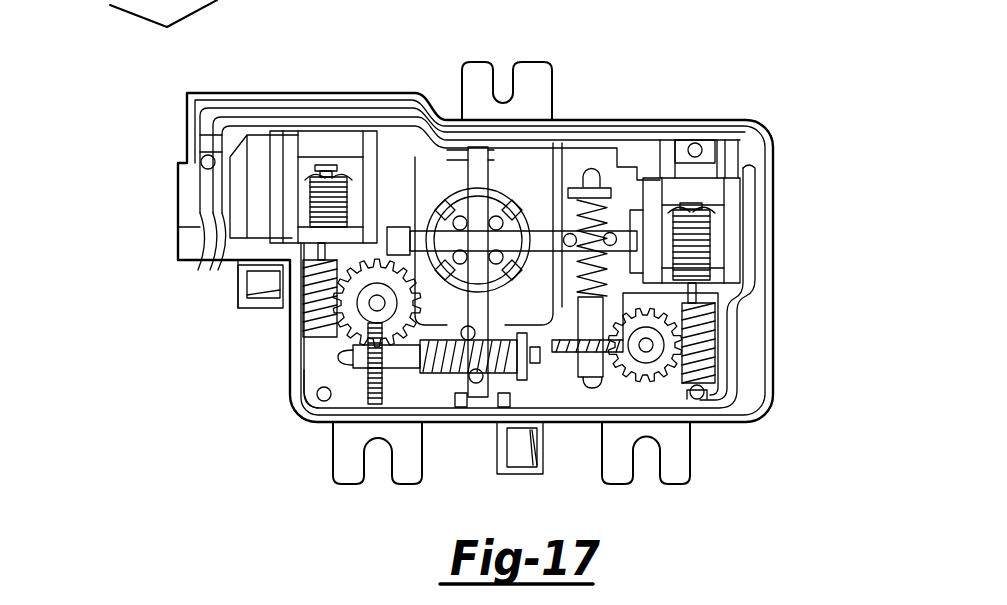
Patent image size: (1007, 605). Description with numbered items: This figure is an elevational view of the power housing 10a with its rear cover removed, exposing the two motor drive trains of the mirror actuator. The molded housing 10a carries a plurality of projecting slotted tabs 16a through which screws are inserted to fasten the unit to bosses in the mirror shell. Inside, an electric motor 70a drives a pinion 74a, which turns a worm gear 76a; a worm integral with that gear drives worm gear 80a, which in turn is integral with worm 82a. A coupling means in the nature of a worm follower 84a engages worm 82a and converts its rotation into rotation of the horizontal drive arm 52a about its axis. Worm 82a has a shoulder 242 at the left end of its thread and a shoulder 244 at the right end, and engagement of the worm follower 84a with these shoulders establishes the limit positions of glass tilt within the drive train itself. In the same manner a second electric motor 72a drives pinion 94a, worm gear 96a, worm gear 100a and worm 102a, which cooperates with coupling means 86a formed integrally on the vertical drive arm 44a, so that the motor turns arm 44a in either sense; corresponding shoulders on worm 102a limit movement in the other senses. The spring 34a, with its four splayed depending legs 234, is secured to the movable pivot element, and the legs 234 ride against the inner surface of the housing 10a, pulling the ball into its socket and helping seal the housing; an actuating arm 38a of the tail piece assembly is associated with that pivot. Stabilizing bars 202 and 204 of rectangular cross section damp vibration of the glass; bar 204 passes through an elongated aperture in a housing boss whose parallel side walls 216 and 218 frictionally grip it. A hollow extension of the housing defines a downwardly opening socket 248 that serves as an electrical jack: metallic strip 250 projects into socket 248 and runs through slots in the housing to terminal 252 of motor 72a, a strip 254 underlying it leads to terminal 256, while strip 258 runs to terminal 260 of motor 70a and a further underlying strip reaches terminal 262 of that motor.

The power housing 10a is at (256, 93).
The projecting slotted tab 16a is at (530, 62).
The spring 34a is at (498, 172).
The actuating arm 38a is at (456, 162).
The vertical drive arm 44a is at (541, 220).
The horizontal drive arm 52a is at (443, 126).
The electric motor 70a is at (340, 135).
The electric motor 72a is at (722, 198).
The pinion 74a is at (307, 307).
The worm gear 76a is at (350, 318).
The worm gear 80a is at (370, 378).
The worm 82a is at (493, 355).
The worm follower 84a is at (456, 377).
The coupling means 86a is at (566, 218).
The pinion 94a is at (708, 358).
The worm gear 96a is at (700, 395).
The worm gear 100a is at (563, 352).
The worm 102a is at (623, 268).
The stabilizing bar 202 is at (255, 282).
The stabilizing bar 204 is at (500, 460).
The side wall 216 is at (503, 476).
The side wall 218 is at (543, 456).
The spring leg 234 is at (446, 201).
The shoulder 242 is at (447, 376).
The shoulder 244 is at (500, 406).
The socket 248 is at (190, 232).
The metallic strip 250 is at (205, 258).
The terminal 252 is at (732, 172).
The metallic strip 254 is at (667, 145).
The terminal 256 is at (688, 156).
The metallic strip 258 is at (223, 258).
The terminal 260 is at (363, 130).
The terminal 262 is at (296, 128).